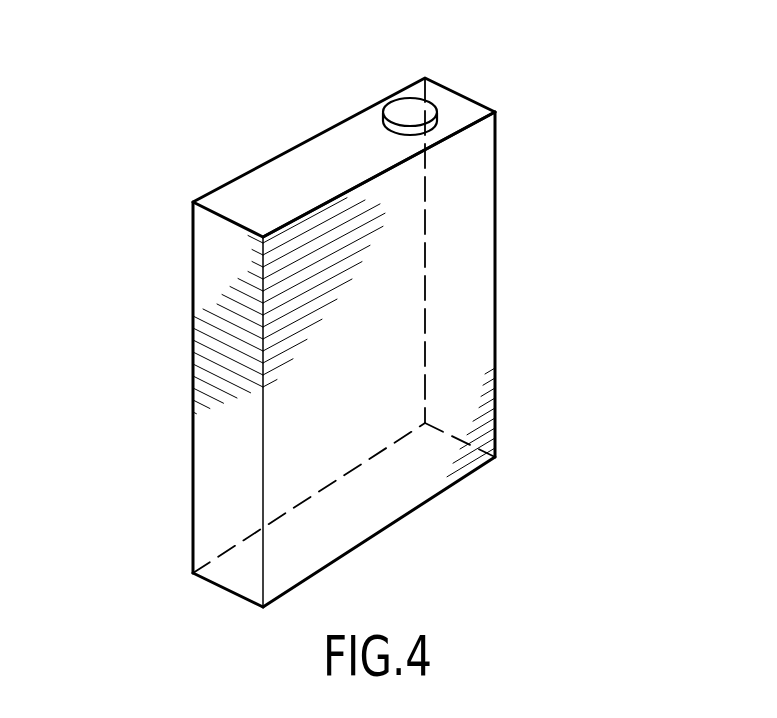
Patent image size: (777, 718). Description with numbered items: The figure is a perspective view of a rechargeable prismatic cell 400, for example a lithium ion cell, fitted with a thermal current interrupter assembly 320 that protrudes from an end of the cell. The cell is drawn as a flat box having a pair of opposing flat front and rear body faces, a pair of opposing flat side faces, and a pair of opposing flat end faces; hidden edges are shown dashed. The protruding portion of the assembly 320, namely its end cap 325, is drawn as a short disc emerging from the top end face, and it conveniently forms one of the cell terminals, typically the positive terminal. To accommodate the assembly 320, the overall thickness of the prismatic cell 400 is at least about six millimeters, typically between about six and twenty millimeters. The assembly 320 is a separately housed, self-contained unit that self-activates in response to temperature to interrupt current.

The prismatic cell 400 is at (495, 203).
The thermal current interrupter assembly 320 is at (435, 108).
The end cap 325 is at (402, 112).